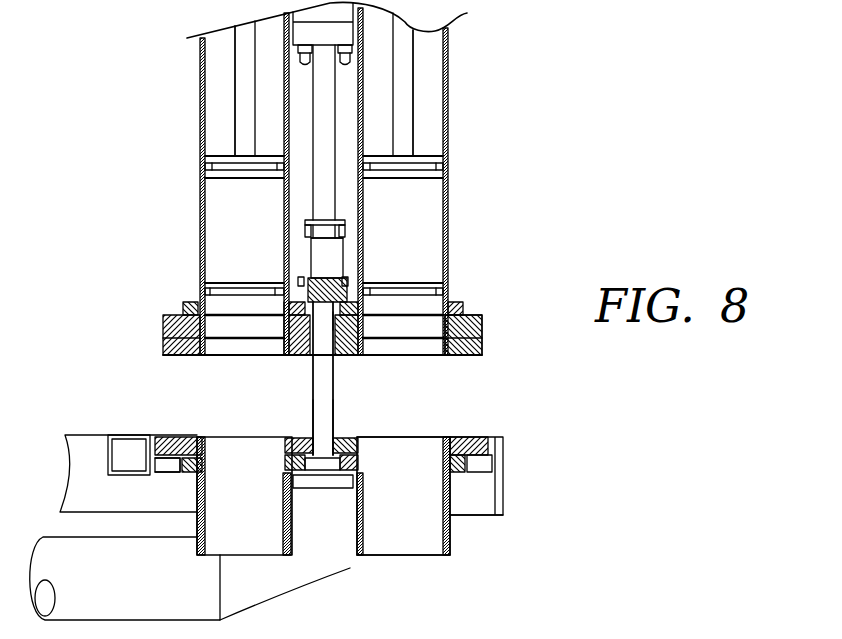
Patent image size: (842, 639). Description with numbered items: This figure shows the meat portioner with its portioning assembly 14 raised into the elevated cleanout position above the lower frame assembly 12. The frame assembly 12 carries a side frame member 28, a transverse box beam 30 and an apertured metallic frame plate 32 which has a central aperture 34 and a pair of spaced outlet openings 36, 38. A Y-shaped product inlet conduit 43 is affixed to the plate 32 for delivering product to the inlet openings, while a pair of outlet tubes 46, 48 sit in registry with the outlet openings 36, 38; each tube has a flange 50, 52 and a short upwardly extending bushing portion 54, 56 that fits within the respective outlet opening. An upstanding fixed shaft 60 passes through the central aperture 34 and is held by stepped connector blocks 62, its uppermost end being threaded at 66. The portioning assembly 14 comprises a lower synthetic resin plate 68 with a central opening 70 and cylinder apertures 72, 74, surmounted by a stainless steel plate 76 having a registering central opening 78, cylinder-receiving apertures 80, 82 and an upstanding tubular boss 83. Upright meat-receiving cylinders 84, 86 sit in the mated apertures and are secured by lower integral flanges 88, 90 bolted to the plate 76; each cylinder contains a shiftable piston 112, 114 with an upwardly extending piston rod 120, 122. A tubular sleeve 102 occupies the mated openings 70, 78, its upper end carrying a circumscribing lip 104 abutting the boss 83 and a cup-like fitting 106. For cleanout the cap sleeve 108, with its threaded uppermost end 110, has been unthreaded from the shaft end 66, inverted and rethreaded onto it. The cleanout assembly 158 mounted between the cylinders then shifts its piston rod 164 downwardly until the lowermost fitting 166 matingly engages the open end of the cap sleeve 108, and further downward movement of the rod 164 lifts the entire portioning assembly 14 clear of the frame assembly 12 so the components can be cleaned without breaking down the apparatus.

The frame assembly 12 is at (586, 476).
The portioning assembly 14 is at (469, 119).
The side frame member 28 is at (82, 473).
The transverse box beam 30 is at (143, 433).
The frame plate 32 is at (503, 456).
The central aperture 34 is at (322, 440).
The outlet opening 36 is at (283, 445).
The outlet opening 38 is at (360, 440).
The product inlet conduit 43 is at (263, 568).
The outlet tube 46 is at (197, 492).
The outlet tube 48 is at (448, 537).
The flange 50 is at (177, 472).
The flange 52 is at (470, 463).
The bushing portion 54 is at (208, 437).
The bushing portion 56 is at (430, 437).
The fixed shaft 60 is at (322, 408).
The stepped connector block 62 is at (328, 488).
The threaded end 66 is at (313, 360).
The synthetic resin plate 68 is at (485, 338).
The central opening 70 is at (330, 316).
The cylinder aperture 72 is at (206, 350).
The cylinder aperture 74 is at (427, 355).
The stainless steel plate 76 is at (480, 322).
The central opening 78 is at (360, 328).
The cylinder-receiving aperture 80 is at (200, 292).
The cylinder-receiving aperture 82 is at (447, 328).
The tubular boss 83 is at (355, 292).
The meat-receiving cylinder 84 is at (199, 192).
The meat-receiving cylinder 86 is at (450, 192).
The lower integral flange 88 is at (192, 302).
The lower integral flange 90 is at (455, 303).
The tubular sleeve 102 is at (287, 356).
The circumscribing lip 104 is at (303, 290).
The cup-like fitting 106 is at (348, 290).
The cap sleeve 108 is at (345, 245).
The threaded uppermost end 110 is at (327, 270).
The piston 112 is at (250, 242).
The piston 114 is at (430, 222).
The piston rod 120 is at (245, 137).
The piston rod 122 is at (407, 140).
The cleanout assembly 158 is at (313, 33).
The piston rod 164 is at (313, 80).
The fitting 166 is at (305, 212).